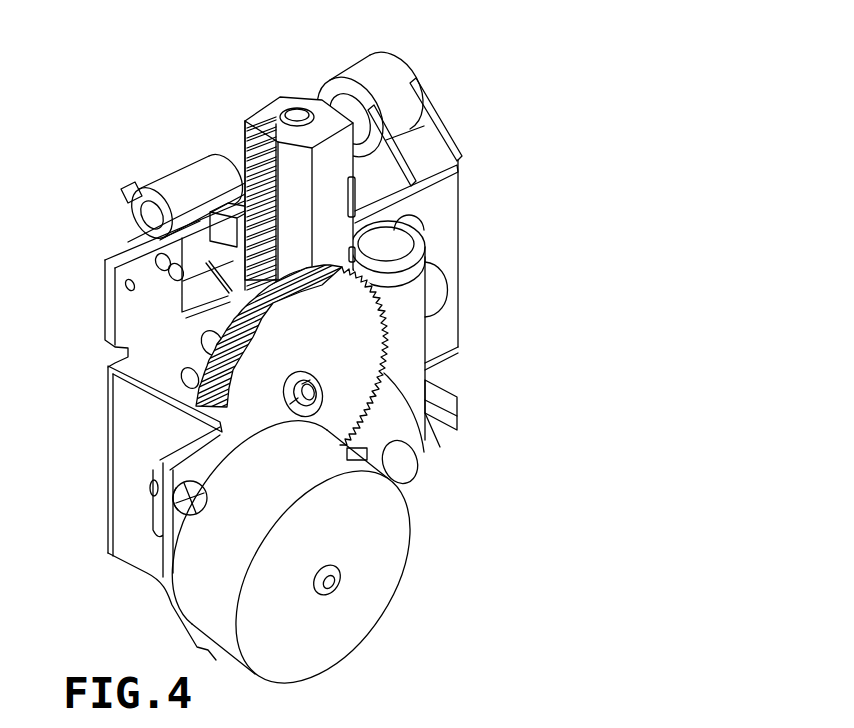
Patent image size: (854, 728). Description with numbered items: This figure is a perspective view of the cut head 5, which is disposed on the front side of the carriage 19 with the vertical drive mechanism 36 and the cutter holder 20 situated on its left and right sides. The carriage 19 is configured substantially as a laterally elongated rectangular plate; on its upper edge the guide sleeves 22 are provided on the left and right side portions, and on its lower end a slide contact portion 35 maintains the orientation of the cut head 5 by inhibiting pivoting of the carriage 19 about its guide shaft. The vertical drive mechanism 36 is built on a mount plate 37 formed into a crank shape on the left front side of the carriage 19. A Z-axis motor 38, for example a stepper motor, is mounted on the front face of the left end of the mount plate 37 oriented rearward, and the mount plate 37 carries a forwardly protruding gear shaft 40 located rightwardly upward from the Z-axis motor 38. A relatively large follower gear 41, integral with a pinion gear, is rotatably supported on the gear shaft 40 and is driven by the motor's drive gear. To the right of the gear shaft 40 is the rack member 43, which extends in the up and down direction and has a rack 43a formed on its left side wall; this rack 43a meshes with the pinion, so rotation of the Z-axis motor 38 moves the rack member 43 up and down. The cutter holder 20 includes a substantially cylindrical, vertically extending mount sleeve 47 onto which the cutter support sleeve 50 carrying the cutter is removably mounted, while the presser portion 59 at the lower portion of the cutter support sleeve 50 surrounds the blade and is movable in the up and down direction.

The cut head 5 is at (486, 125).
The carriage 19 is at (450, 203).
The cutter holder 20 is at (443, 372).
The guide sleeves 22 is at (183, 180).
The slide contact portion 35 is at (460, 414).
The vertical drive mechanism 36 is at (417, 520).
The mount plate 37 is at (130, 461).
The Z-axis motor 38 is at (330, 658).
The gear shaft 40 is at (315, 402).
The follower gear 41 is at (405, 440).
The rack member 43 is at (338, 162).
The rack 43a is at (247, 165).
The mount sleeve 47 is at (410, 337).
The cutter support sleeve 50 is at (415, 245).
The presser portion 59 is at (403, 471).